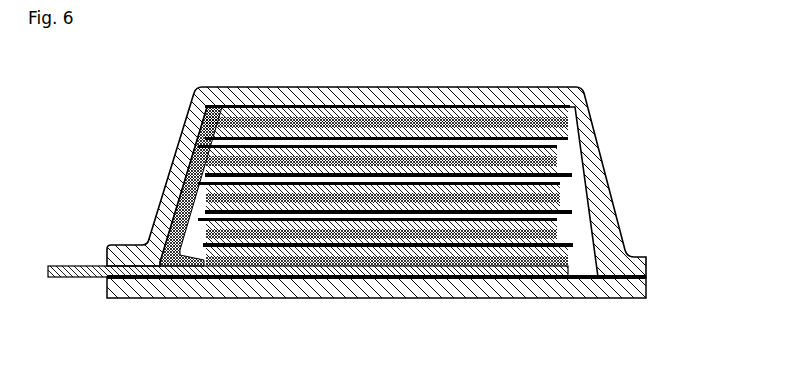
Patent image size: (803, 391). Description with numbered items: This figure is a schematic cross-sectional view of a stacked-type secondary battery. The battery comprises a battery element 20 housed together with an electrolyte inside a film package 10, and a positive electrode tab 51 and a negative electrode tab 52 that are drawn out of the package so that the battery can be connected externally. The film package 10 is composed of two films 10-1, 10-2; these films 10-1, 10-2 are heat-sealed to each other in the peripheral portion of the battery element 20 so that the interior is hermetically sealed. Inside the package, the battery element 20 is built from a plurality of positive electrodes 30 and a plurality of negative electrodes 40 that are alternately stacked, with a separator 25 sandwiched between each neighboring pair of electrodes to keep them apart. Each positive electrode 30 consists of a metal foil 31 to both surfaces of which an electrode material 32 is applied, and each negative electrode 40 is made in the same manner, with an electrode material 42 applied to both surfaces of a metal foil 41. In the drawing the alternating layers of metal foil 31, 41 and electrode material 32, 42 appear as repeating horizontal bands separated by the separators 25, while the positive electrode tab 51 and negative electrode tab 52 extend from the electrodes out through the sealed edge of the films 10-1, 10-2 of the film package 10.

The film package 10 is at (420, 213).
The film 10-1 is at (400, 182).
The film 10-2 is at (642, 297).
The battery element 20 is at (277, 279).
The separator 25 is at (524, 280).
The positive electrode 30 is at (171, 154).
The metal foil 31 is at (375, 148).
The electrode material 32 is at (413, 165).
The negative electrode 40 is at (574, 139).
The metal foil 41 is at (465, 112).
The electrode material 42 is at (513, 106).
The positive electrode tab 51 is at (308, 251).
The negative electrode tab 52 is at (73, 266).